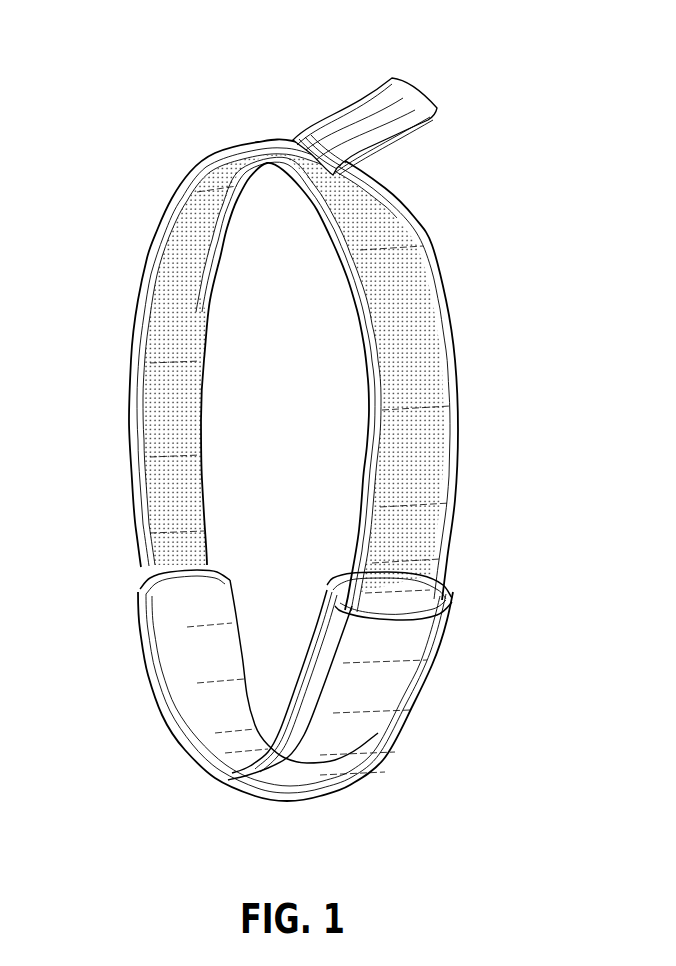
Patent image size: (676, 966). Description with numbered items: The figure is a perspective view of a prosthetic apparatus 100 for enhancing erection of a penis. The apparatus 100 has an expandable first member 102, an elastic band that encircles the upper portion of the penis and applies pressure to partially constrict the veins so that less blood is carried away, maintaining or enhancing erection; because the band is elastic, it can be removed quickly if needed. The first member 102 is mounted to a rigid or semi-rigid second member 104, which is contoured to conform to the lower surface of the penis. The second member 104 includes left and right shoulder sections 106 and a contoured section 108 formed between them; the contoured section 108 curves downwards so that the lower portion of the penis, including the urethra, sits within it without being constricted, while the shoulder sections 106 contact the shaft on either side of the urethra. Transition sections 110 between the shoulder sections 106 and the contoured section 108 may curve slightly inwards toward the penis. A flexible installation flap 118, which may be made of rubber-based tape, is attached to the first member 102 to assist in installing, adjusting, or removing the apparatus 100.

The prosthetic apparatus 100 is at (310, 426).
The expandable first member 102 is at (442, 239).
The second member 104 is at (310, 699).
The shoulder sections 106 is at (155, 610).
The contoured section 108 is at (232, 770).
The transition sections 110 is at (185, 703).
The flexible installation flaps 118 is at (362, 80).